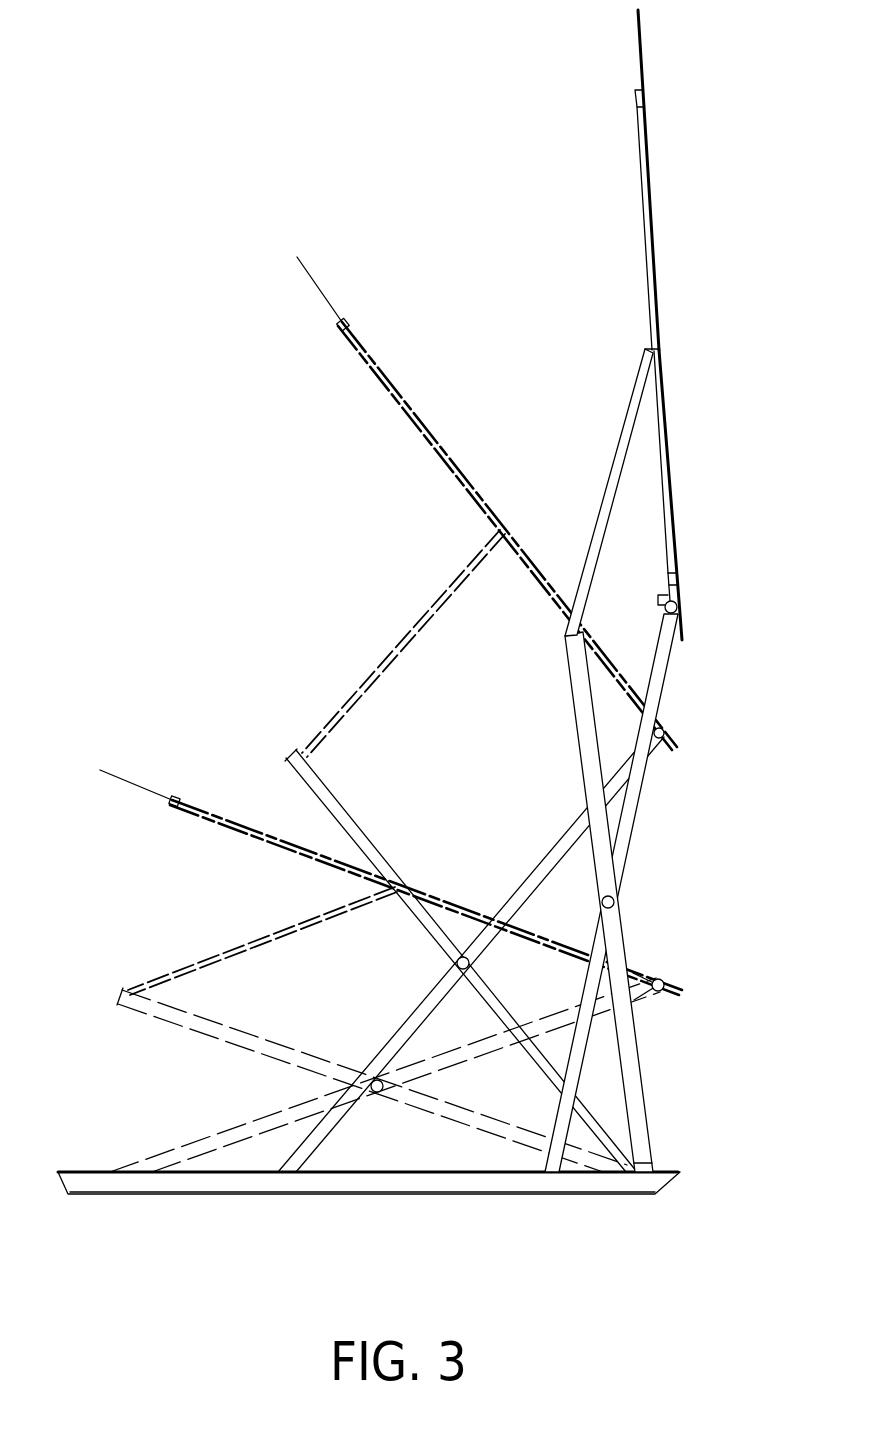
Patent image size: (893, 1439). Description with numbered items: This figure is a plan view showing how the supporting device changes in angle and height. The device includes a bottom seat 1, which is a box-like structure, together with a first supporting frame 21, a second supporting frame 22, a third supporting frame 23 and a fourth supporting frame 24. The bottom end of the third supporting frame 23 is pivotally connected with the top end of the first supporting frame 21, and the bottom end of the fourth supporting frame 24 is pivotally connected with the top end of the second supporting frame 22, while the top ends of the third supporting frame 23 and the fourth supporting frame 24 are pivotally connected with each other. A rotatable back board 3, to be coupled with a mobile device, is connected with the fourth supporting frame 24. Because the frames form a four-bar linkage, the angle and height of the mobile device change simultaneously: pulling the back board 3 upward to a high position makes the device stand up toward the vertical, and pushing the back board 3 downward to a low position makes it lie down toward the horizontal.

The bottom seat 1 is at (393, 1185).
The back board 3 is at (652, 178).
The first supporting frame 21 is at (637, 1088).
The second supporting frame 22 is at (556, 1120).
The third supporting frame 23 is at (612, 500).
The fourth supporting frame 24 is at (668, 497).